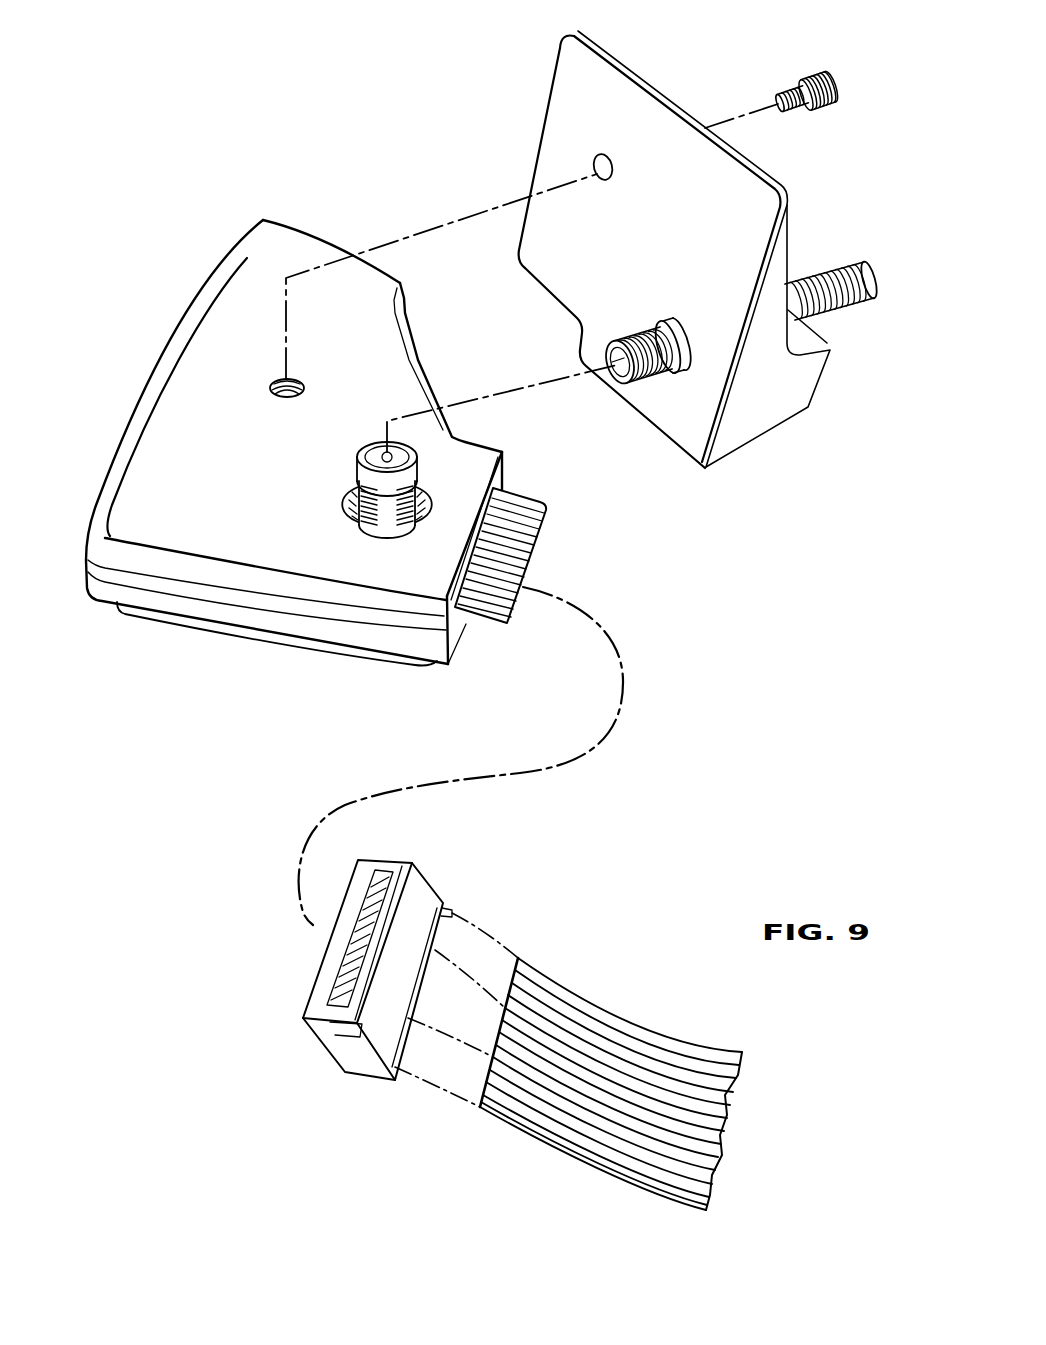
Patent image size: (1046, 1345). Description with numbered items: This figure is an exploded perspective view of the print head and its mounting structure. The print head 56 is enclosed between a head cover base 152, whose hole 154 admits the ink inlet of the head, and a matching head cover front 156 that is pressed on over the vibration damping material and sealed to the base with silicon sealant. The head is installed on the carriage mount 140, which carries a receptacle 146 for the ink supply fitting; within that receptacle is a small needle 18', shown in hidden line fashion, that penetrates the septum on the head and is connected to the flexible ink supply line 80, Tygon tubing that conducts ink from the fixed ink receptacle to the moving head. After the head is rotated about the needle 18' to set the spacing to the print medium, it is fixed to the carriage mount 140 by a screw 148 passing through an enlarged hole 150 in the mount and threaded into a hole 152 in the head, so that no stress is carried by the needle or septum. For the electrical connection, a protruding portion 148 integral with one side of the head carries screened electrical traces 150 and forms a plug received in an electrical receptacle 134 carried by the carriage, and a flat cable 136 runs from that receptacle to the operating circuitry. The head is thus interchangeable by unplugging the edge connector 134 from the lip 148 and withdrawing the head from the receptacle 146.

The print head 56 is at (226, 505).
The hole 154 is at (150, 447).
The head cover front 156 is at (203, 620).
The head cover base 152 is at (270, 393).
The protruding portion 148 is at (500, 623).
The electrical traces 150 is at (600, 162).
The carriage mount 140 is at (758, 430).
The receptacle 146 is at (648, 378).
The needle 18' is at (679, 449).
The flexible ink supply line 80 is at (860, 300).
The electrical receptacle 134 is at (425, 897).
The flat cable 136 is at (613, 1032).